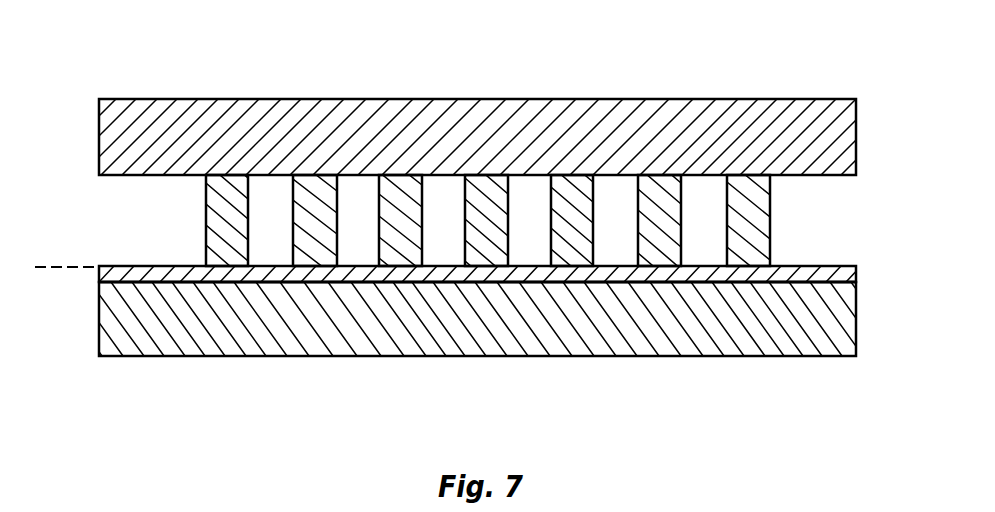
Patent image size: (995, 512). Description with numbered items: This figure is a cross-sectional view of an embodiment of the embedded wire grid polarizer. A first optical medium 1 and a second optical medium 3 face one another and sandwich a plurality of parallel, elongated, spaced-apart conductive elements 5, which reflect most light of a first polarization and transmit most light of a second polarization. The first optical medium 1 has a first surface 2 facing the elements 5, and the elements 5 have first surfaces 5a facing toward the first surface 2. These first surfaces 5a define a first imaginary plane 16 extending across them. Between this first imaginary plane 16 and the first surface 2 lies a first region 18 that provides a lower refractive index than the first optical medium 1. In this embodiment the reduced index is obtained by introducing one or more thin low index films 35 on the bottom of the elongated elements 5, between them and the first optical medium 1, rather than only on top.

The first optical medium 1 is at (477, 311).
The first surface 2 is at (110, 310).
The second optical medium 3 is at (227, 120).
The elongated elements 5 is at (460, 287).
The first surfaces 5a is at (223, 262).
The first imaginary plane 16 is at (40, 270).
The first region 18 is at (110, 277).
The low index films 35 is at (348, 273).